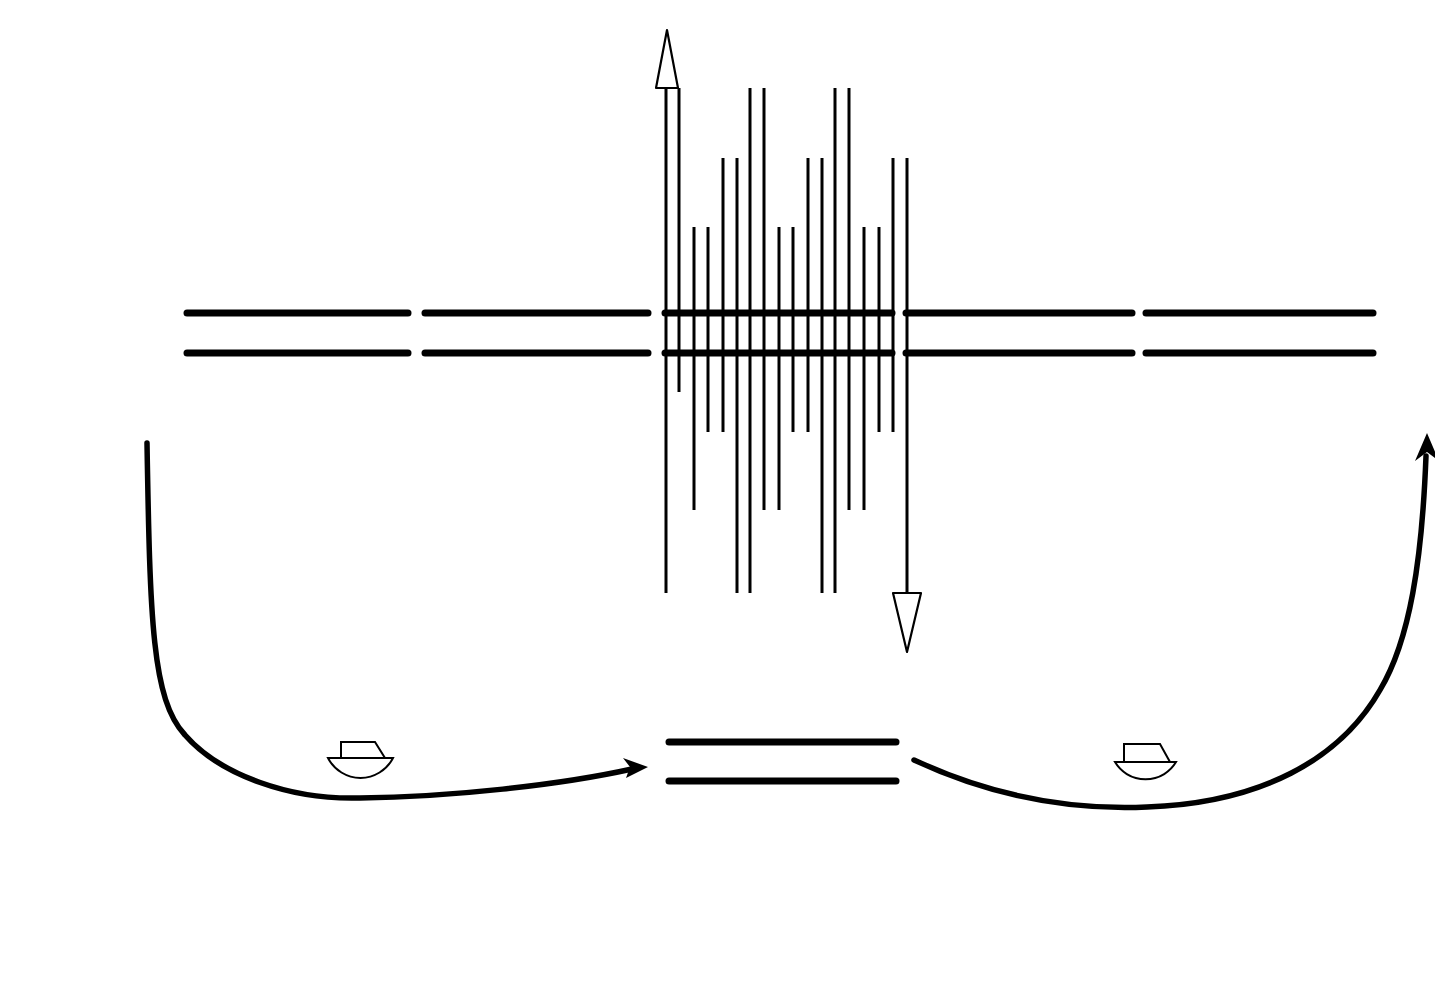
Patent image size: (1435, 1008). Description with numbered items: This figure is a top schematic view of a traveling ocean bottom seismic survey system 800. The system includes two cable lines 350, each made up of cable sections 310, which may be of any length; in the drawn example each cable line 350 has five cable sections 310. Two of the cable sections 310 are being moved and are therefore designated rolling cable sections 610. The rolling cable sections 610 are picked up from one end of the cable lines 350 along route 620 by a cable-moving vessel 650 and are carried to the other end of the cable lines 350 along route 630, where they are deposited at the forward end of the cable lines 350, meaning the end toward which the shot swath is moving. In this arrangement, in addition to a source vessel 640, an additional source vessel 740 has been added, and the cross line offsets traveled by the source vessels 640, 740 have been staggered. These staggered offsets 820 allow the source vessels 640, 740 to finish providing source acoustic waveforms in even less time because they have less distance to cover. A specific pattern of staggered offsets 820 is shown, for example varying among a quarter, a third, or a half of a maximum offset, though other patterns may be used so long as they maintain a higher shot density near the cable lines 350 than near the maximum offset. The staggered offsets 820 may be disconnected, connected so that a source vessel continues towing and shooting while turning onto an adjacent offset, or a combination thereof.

The traveling ocean bottom seismic survey system 800 is at (1260, 838).
The cable section 310 is at (285, 309).
The cable line 350 is at (184, 352).
The staggered offsets 820 is at (665, 180).
The source vessel 640 is at (656, 87).
The additional source vessel 740 is at (914, 624).
The rolling cable section 610 is at (895, 739).
The route 620 is at (243, 777).
The route 630 is at (1042, 794).
The cable-moving vessel 650 is at (397, 758).